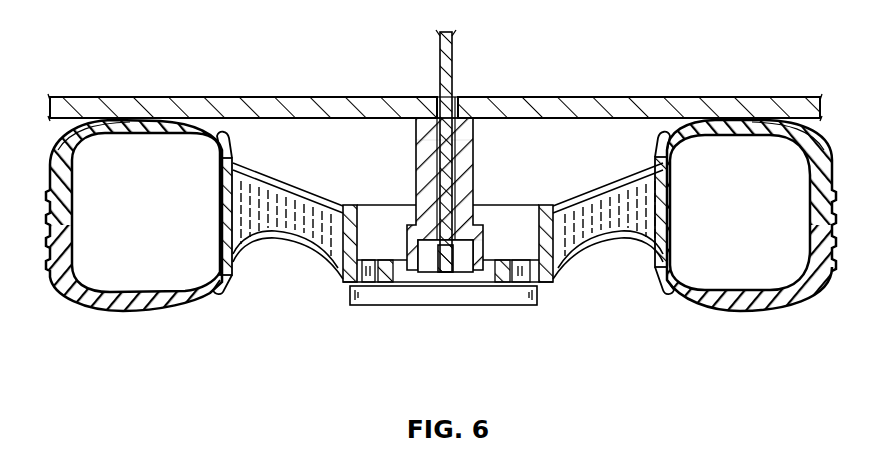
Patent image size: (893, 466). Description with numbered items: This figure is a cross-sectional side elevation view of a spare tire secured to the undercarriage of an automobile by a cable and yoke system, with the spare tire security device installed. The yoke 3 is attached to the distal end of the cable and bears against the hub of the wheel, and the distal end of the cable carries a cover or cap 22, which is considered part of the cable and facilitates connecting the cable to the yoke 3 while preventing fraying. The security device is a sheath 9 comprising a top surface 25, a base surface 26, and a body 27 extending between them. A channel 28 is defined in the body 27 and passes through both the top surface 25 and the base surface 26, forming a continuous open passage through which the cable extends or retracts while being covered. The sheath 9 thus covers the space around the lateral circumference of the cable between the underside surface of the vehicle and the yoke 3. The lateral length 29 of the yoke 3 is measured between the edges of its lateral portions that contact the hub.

The yoke 3 is at (389, 306).
The sheath 9 is at (410, 178).
The cover or cap 22 is at (413, 262).
The top surface 25 is at (416, 119).
The base surface 26 is at (488, 262).
The body 27 is at (474, 184).
The channel 28 is at (455, 117).
The lateral length 29 is at (537, 313).